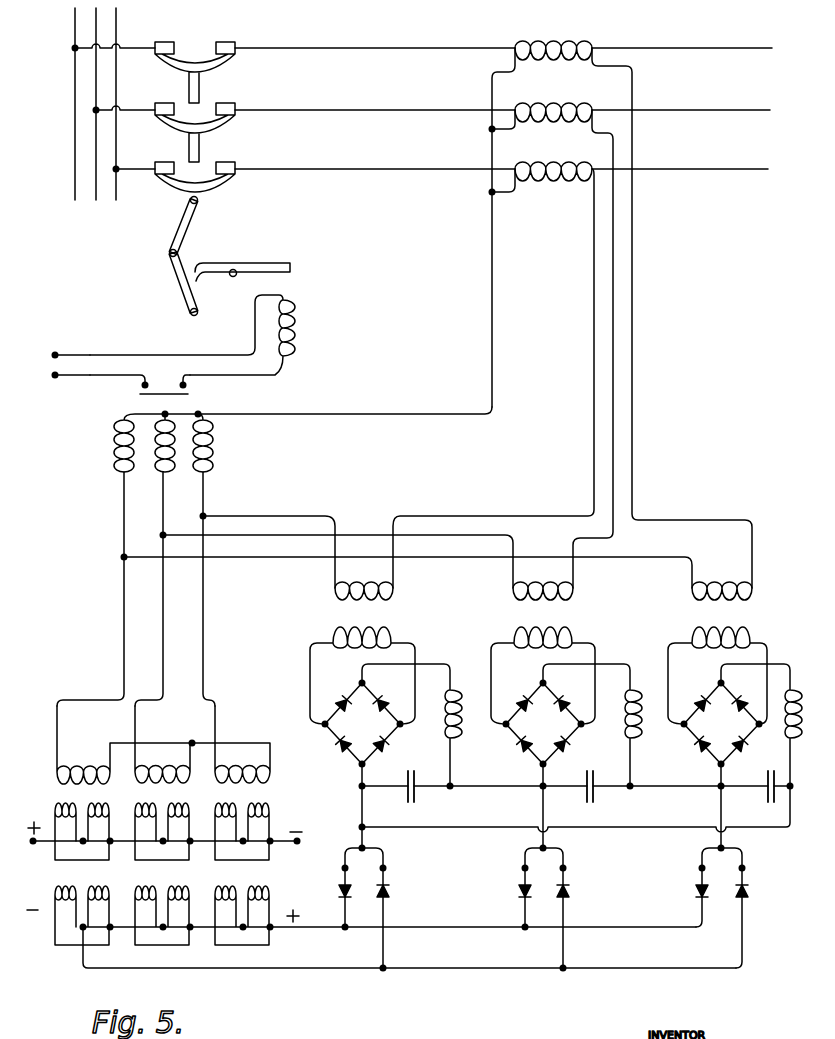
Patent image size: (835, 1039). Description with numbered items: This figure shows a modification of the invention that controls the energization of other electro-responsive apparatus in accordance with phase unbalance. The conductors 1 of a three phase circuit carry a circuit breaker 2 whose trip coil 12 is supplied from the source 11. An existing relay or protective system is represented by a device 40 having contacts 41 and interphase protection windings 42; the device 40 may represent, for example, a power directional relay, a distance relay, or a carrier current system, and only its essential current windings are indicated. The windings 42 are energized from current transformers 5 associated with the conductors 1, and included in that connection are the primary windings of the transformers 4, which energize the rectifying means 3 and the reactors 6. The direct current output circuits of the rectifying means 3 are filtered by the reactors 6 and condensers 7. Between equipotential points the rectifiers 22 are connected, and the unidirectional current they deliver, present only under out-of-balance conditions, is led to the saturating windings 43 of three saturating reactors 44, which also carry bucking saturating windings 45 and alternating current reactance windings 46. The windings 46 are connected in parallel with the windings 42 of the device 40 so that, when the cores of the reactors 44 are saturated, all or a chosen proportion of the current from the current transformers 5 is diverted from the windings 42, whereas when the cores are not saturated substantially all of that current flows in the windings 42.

The conductors 1 is at (728, 196).
The circuit breaker 2 is at (222, 168).
The rectifying means 3 is at (542, 723).
The transformers 4 is at (539, 653).
The current transformers 5 is at (553, 101).
The reactors 6 is at (582, 725).
The condensers 7 is at (593, 774).
The source 11 is at (62, 349).
The trip coil 12 is at (192, 335).
The rectifiers 22 is at (561, 908).
The device 40 is at (259, 470).
The contacts 41 is at (140, 380).
The interphase protection windings 42 is at (223, 488).
The saturating windings 43 is at (232, 977).
The saturating reactors 44 is at (222, 738).
The bucking saturating windings 45 is at (235, 869).
The alternating current reactance windings 46 is at (163, 745).